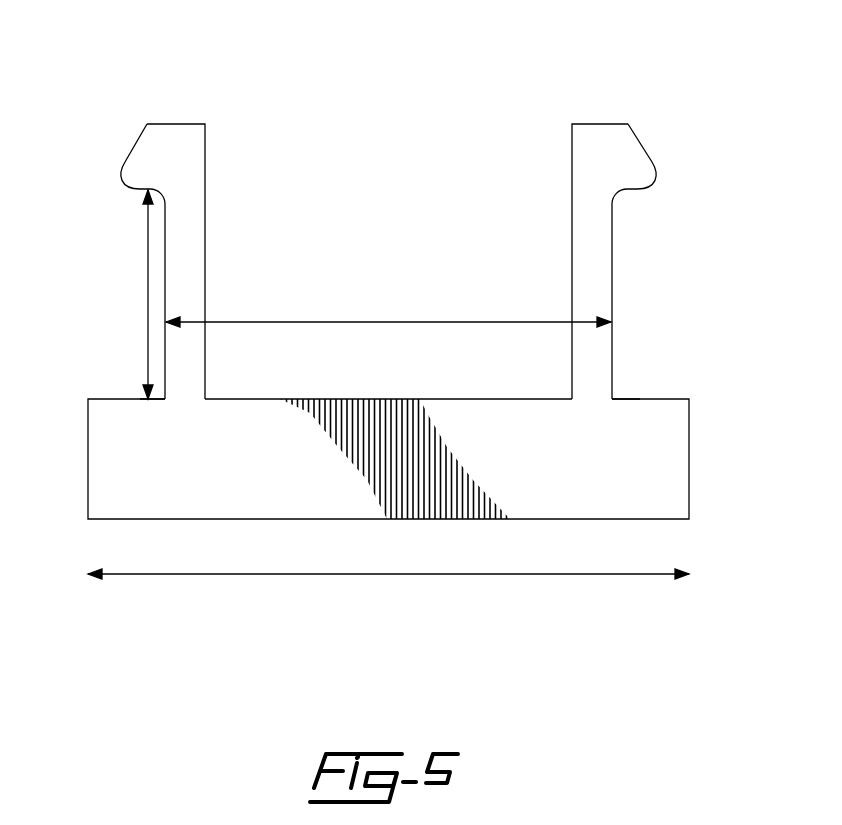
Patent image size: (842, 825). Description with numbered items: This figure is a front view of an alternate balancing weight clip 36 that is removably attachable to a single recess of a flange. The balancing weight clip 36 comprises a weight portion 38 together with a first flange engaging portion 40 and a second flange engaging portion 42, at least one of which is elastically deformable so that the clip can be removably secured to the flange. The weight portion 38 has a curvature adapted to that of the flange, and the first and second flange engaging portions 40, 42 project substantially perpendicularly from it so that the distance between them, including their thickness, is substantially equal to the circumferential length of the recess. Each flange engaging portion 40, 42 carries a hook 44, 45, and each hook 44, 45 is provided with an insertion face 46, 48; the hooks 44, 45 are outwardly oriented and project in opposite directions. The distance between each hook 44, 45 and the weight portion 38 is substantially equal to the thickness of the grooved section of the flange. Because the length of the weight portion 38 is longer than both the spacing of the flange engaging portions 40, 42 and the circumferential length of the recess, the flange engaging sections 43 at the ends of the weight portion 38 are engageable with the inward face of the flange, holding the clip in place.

The balancing weight clip 36 is at (690, 190).
The weight portion 38 is at (640, 452).
The first flange engaging portion 40 is at (182, 263).
The second flange engaging portion 42 is at (592, 270).
The flange engaging sections 43 is at (125, 398).
The hook 44 is at (178, 142).
The hook 45 is at (598, 135).
The insertion face 46 is at (137, 143).
The insertion face 48 is at (645, 148).